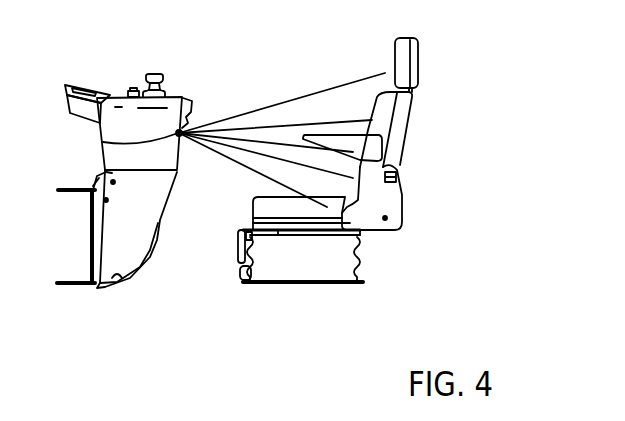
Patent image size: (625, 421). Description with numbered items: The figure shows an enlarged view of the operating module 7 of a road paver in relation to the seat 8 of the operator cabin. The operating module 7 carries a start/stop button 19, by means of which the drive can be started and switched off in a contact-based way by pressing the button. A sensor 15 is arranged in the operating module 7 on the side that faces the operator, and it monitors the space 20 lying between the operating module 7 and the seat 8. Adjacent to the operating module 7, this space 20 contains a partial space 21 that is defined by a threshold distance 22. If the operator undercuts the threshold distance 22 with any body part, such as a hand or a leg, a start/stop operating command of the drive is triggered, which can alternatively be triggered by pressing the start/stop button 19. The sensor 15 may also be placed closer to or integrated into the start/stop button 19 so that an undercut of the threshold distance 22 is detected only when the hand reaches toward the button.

The operating module 7 is at (73, 84).
The seat 8 is at (404, 128).
The sensor 15 is at (103, 142).
The start/stop button 19 is at (132, 87).
The space 20 is at (302, 74).
The partial space 21 is at (203, 162).
The threshold distance 22 is at (222, 108).